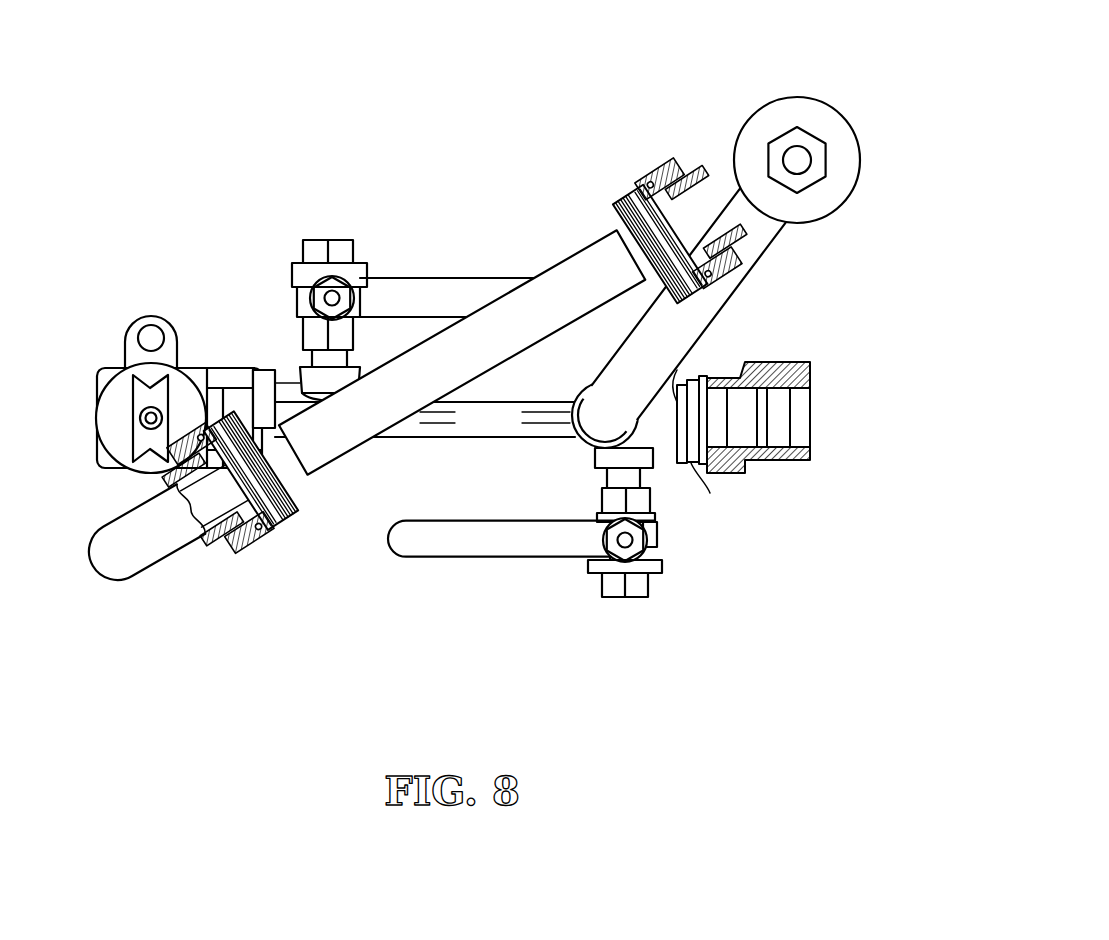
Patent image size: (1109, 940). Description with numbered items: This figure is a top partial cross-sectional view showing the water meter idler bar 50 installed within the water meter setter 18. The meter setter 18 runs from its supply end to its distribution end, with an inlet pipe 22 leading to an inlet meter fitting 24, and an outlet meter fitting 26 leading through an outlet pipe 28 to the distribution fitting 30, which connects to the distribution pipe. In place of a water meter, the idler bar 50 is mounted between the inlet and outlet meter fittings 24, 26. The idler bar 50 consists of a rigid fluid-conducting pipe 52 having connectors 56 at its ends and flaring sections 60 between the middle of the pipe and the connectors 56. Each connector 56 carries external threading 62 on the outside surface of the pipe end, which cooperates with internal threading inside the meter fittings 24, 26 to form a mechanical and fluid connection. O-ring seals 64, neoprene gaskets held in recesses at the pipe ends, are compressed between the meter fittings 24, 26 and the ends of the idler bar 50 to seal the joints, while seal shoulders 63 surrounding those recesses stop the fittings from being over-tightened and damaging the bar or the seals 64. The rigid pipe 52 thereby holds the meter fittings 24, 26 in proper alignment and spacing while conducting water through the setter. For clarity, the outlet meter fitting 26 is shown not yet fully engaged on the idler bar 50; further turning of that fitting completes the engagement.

The meter setter 18 is at (806, 52).
The inlet pipe 22 is at (130, 582).
The inlet meter fitting 24 is at (277, 547).
The outlet meter fitting 26 is at (657, 174).
The outlet pipe 28 is at (705, 313).
The distribution fitting 30 is at (777, 462).
The water meter idler bar 50 is at (565, 268).
The fluid-conducting pipe 52 is at (475, 355).
The connectors 56 is at (643, 197).
The flaring sections 60 is at (473, 358).
The external threading 62 is at (665, 248).
The seal shoulders 63 is at (684, 240).
The O-ring seals 64 is at (687, 227).